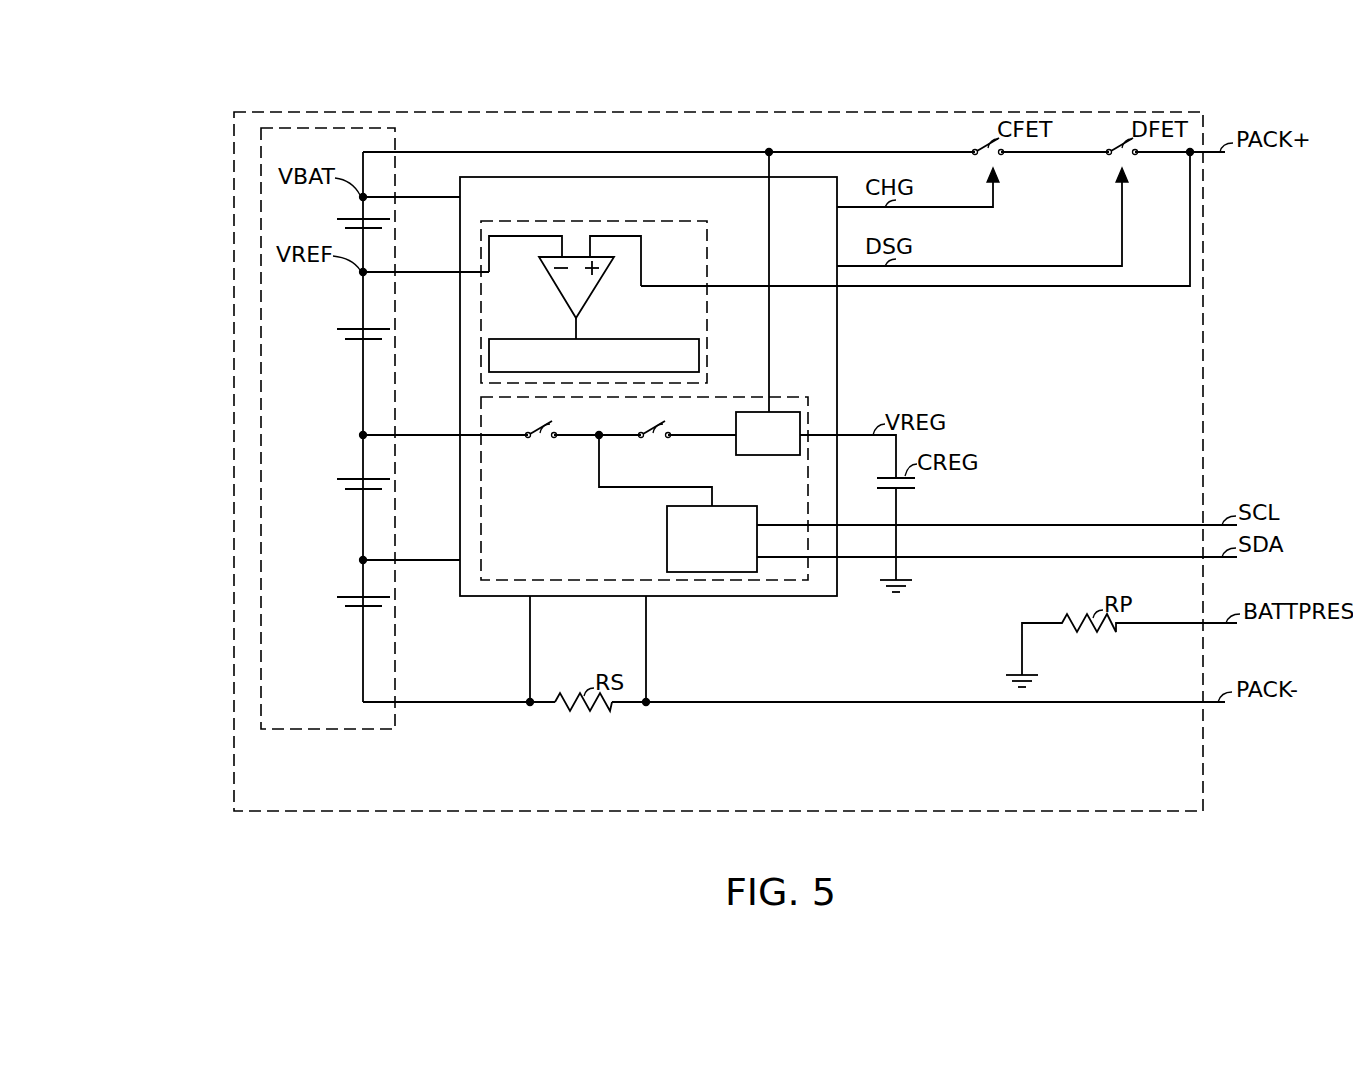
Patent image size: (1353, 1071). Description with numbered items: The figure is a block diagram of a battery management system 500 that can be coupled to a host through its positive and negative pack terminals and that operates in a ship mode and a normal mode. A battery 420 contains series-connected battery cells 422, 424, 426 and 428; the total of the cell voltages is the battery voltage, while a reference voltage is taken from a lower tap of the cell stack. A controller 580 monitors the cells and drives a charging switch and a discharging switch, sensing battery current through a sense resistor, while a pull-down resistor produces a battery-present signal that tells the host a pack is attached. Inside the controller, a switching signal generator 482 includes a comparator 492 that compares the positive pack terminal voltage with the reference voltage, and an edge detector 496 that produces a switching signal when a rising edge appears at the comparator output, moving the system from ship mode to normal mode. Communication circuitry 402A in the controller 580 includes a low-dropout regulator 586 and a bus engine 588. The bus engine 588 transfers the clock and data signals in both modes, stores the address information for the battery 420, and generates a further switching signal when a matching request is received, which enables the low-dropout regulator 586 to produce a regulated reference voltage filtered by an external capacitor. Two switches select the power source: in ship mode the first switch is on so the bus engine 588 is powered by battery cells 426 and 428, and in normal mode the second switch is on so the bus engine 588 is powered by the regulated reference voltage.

The battery management system 500 is at (205, 111).
The battery 420 is at (330, 729).
The battery cell 422 is at (361, 217).
The battery cell 424 is at (361, 327).
The battery cell 426 is at (361, 477).
The battery cell 428 is at (361, 595).
The communication circuitry 402A is at (790, 397).
The switching signal generator 482 is at (707, 281).
The comparator 492 is at (556, 288).
The edge detector 496 is at (607, 339).
The controller 580 is at (837, 377).
The low-dropout regulator (LDO) 586 is at (745, 455).
The bus engine 588 is at (667, 522).